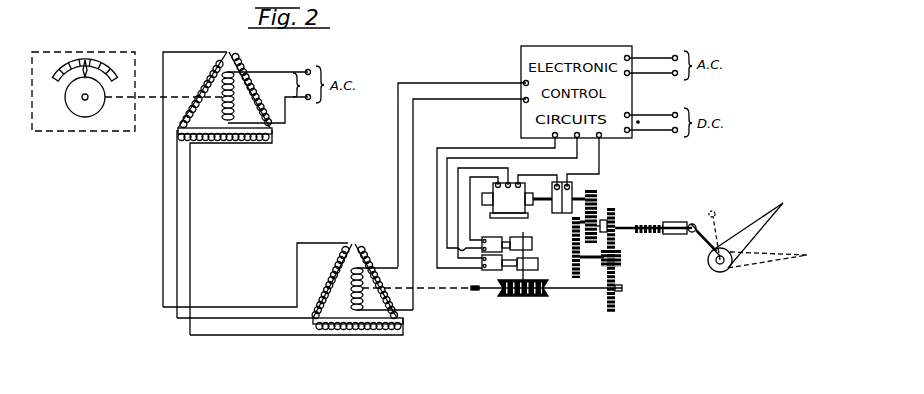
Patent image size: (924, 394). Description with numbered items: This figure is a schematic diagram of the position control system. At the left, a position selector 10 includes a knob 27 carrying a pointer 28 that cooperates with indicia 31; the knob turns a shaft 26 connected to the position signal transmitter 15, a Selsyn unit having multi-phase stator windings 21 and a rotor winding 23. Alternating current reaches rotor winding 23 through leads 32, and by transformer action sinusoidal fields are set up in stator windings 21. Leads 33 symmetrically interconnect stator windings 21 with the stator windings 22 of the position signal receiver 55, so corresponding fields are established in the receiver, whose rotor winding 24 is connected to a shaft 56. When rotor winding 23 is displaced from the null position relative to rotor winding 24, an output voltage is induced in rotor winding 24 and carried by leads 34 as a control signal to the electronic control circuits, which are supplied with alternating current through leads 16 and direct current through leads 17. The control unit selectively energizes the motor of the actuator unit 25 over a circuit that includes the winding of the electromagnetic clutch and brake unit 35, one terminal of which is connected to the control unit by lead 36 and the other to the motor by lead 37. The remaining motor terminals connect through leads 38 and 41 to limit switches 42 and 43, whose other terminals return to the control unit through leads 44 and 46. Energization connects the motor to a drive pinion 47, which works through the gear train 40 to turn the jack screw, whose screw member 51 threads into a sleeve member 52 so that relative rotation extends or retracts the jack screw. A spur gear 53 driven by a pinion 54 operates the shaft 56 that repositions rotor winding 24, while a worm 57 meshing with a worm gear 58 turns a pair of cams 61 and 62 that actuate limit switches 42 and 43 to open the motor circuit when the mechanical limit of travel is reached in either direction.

The position selector 10 is at (99, 165).
The position signal transmitter 15 is at (228, 165).
The leads 16 is at (651, 70).
The leads 17 is at (646, 128).
The multi-phase stator windings 21 is at (203, 83).
The multi-phase stator windings 22 is at (371, 246).
The rotor winding 23 is at (222, 106).
The rotor winding 24 is at (352, 290).
The actuator unit 25 is at (677, 287).
The shaft 26 is at (152, 108).
The knob 27 is at (70, 104).
The pointer 28 is at (88, 66).
The indicia 31 is at (71, 58).
The leads 32 is at (287, 85).
The leads 33 is at (163, 218).
The leads 34 is at (466, 96).
The electromagnetic clutch and brake unit 35 is at (573, 191).
The lead 36 is at (600, 152).
The lead 37 is at (552, 173).
The lead 38 is at (458, 200).
The gear train 40 is at (558, 252).
The lead 41 is at (447, 219).
The limit switch 42 is at (493, 238).
The limit switch 43 is at (492, 272).
The lead 44 is at (485, 157).
The lead 46 is at (447, 147).
The drive pinion 47 is at (598, 193).
The screw member 51 is at (648, 226).
The sleeve member 52 is at (689, 221).
The spur gear 53 is at (616, 300).
The pinion 54 is at (620, 258).
The position signal receiver 55 is at (355, 360).
The shaft 56 is at (580, 291).
The worm 57 is at (516, 298).
The worm gear 58 is at (545, 297).
The cam 61 is at (525, 237).
The cam 62 is at (538, 263).